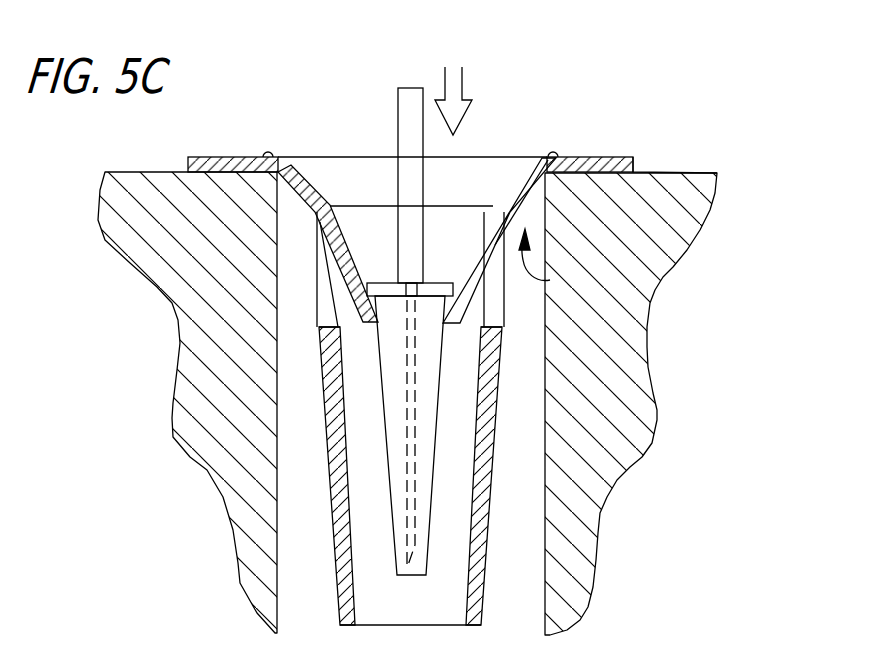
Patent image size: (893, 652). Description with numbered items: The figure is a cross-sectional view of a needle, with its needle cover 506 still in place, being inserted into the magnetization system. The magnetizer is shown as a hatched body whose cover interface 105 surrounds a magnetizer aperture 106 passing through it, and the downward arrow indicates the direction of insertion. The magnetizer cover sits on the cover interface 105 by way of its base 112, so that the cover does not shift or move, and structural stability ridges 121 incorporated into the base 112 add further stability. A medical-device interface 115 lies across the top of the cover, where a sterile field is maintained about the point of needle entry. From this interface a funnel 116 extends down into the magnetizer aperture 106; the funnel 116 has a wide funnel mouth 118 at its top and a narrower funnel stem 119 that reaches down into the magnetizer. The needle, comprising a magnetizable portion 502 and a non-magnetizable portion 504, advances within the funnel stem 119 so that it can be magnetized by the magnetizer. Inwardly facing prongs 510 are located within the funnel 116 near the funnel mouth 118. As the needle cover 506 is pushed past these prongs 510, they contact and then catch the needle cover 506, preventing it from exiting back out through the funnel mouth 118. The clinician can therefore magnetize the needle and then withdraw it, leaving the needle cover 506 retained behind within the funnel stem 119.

The cover interface 105 is at (763, 143).
The magnetizer aperture 106 is at (742, 270).
The base 112 is at (740, 90).
The medical-device interface 115 is at (633, 115).
The funnel 116 is at (320, 157).
The funnel mouth 118 is at (470, 180).
The funnel stem 119 is at (712, 515).
The structural stability ridges 121 is at (568, 110).
The magnetizable portion 502 is at (408, 478).
The non-magnetizable portion 504 is at (410, 132).
The needle cover 506 is at (393, 525).
The inwardly facing prongs 510 is at (683, 350).